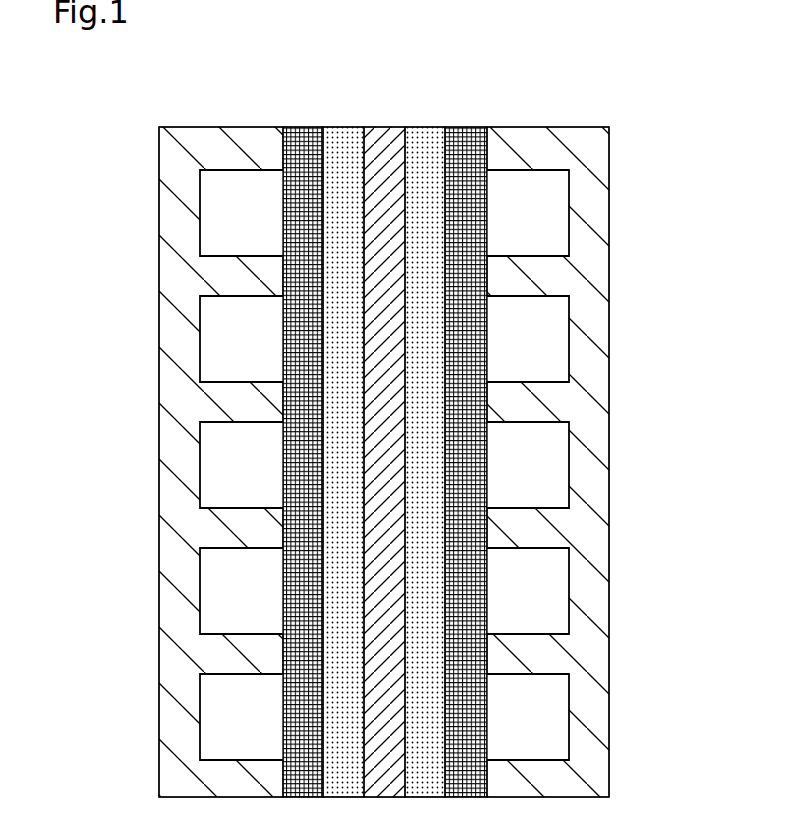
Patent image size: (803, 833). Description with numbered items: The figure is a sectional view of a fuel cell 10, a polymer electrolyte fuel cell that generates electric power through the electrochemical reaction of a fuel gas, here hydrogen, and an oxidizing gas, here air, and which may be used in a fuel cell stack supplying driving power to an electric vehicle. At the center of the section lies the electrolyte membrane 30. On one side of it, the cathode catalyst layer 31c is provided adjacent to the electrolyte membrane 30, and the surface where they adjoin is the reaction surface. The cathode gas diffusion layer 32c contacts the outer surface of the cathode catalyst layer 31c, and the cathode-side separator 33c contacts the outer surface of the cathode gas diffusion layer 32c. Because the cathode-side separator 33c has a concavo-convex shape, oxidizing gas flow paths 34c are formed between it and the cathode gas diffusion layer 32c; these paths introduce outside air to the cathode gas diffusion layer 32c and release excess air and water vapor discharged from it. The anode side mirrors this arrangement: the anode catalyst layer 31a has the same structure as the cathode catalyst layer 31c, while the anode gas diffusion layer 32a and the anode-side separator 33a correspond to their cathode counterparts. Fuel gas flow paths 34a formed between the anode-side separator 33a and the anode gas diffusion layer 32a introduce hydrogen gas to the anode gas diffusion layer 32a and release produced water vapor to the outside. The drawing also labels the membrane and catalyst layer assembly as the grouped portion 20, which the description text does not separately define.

The fuel cell 10 is at (603, 83).
The membrane electrode assembly (MEA) 20 is at (452, 82).
The electrolyte membrane 30 is at (381, 127).
The anode catalyst layer 31a is at (340, 127).
The cathode catalyst layer 31c is at (423, 127).
The anode gas diffusion layer 32a is at (288, 127).
The cathode gas diffusion layer 32c is at (478, 127).
The anode-side separator 33a is at (158, 151).
The cathode-side separator 33c is at (610, 144).
The fuel gas flow paths 34a is at (218, 720).
The oxidizing gas flow paths 34c is at (553, 727).